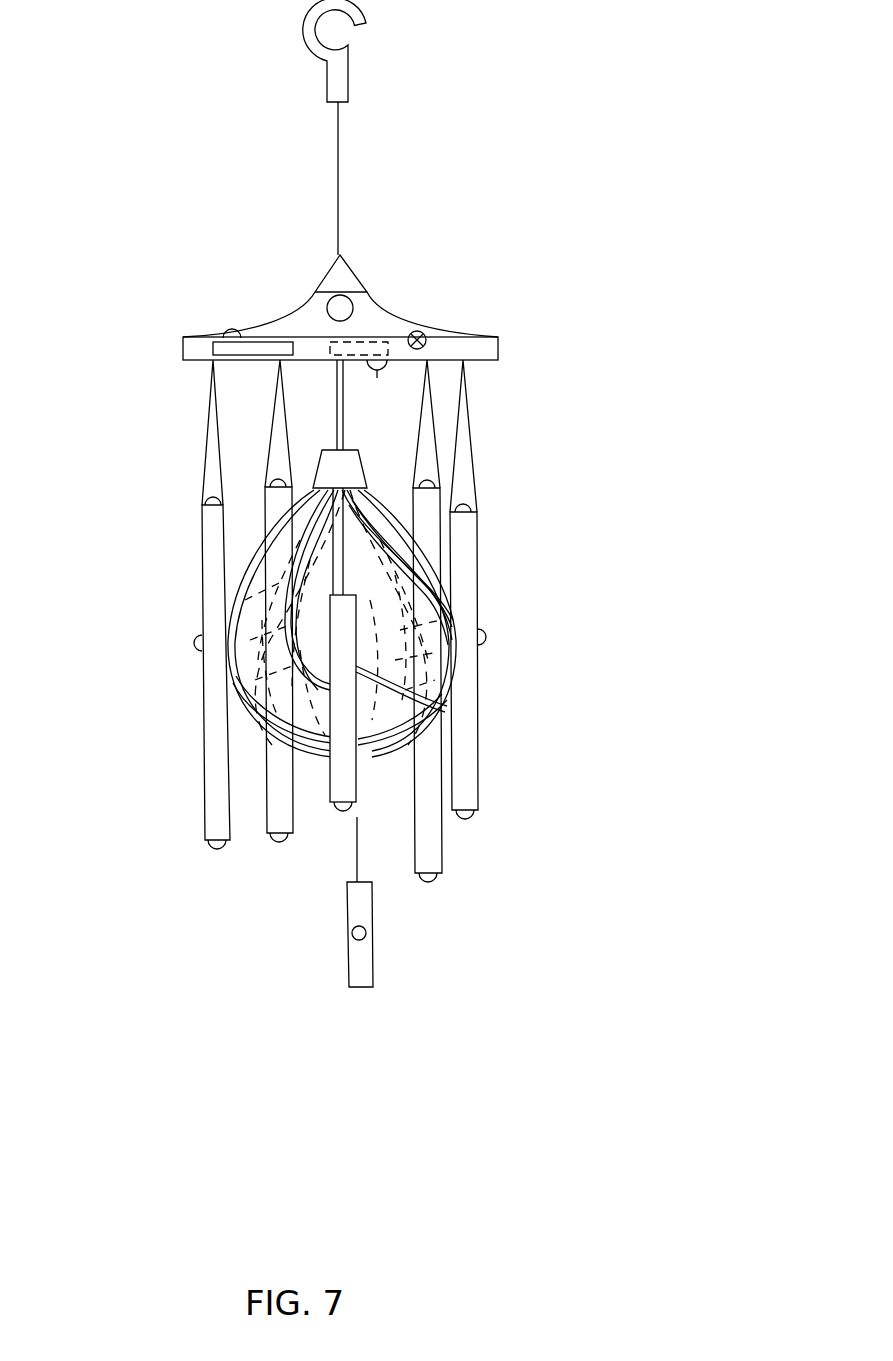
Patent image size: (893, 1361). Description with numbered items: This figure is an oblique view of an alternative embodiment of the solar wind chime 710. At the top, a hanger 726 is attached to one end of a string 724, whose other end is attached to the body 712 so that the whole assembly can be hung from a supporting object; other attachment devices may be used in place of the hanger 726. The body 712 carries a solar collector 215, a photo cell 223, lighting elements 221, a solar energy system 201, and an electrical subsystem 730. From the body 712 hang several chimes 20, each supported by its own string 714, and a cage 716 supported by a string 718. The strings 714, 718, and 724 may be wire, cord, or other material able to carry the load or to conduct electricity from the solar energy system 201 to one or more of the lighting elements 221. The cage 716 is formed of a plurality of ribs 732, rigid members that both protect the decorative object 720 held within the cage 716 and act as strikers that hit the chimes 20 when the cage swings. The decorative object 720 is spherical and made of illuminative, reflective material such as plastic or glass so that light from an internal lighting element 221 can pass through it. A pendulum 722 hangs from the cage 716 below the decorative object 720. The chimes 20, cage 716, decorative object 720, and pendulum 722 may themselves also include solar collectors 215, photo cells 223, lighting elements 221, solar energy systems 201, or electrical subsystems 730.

The solar wind chime 710 is at (599, 221).
The hanger 726 is at (347, 70).
The string 724 is at (339, 183).
The electrical subsystem 730 is at (362, 305).
The body 712 is at (500, 350).
The solar collector 215 is at (215, 338).
The solar energy system 201 is at (370, 340).
The photo cell 223 is at (420, 335).
The string 714 is at (510, 412).
The chime 20 is at (205, 770).
The lighting element 221 is at (236, 330).
The string 718 is at (337, 436).
The cage 716 is at (252, 548).
The decorative object 720 is at (232, 604).
The rib 732 is at (450, 695).
The pendulum 722 is at (348, 948).